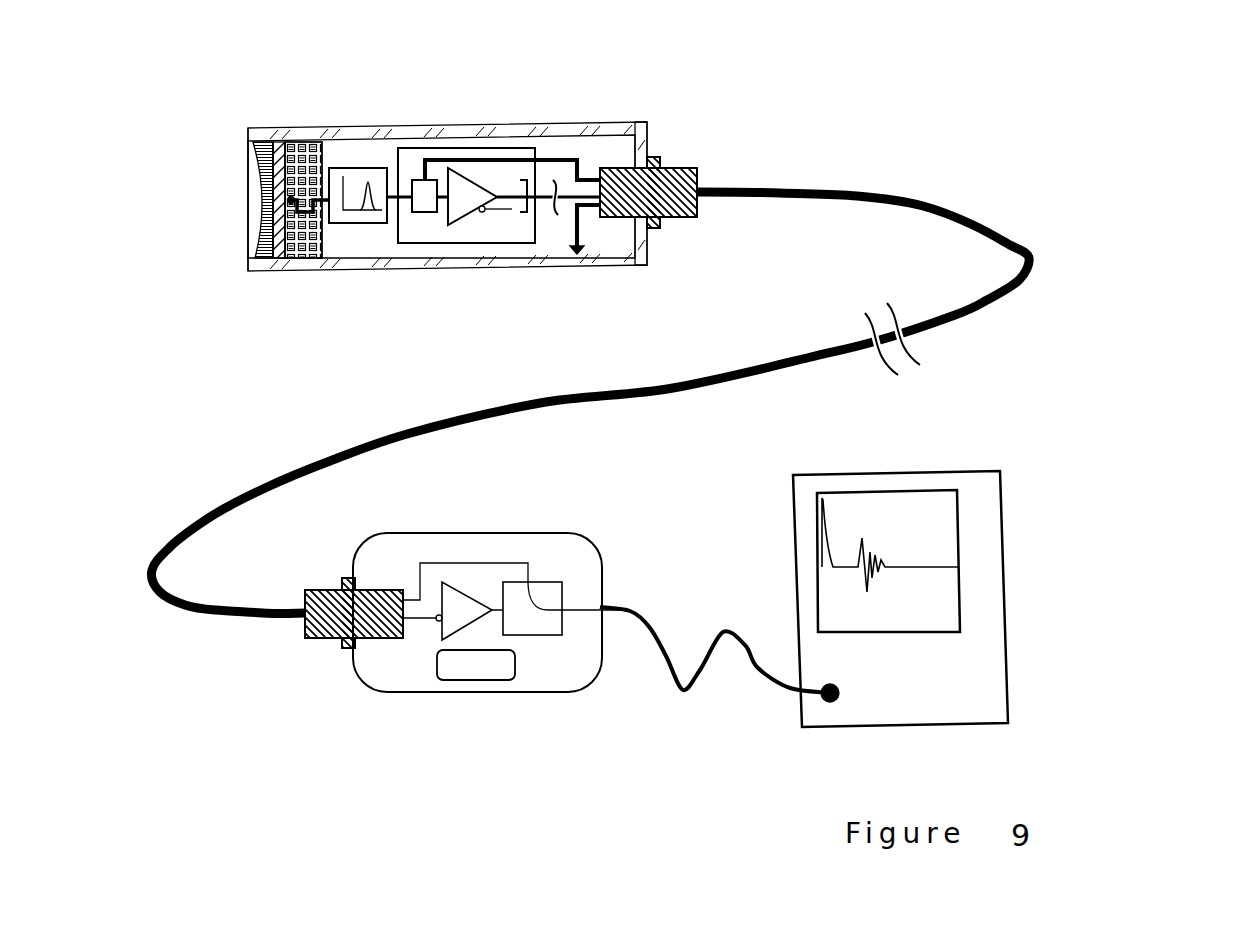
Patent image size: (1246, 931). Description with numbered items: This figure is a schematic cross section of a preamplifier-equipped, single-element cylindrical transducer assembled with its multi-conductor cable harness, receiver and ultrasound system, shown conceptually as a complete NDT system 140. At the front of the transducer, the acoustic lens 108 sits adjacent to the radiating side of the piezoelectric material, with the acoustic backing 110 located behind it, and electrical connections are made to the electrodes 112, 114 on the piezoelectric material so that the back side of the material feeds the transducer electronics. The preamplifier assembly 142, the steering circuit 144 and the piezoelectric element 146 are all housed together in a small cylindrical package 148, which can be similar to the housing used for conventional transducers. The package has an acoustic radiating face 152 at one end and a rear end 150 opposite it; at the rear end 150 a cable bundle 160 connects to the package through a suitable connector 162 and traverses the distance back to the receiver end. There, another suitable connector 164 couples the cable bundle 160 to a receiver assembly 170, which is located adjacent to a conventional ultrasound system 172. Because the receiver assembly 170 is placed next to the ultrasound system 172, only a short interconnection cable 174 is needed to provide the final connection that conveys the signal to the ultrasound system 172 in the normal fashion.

The acoustic lens 108 is at (258, 180).
The acoustic backing 110 is at (303, 250).
The electrode 112 is at (289, 183).
The electrode 114 is at (274, 258).
The system 140 is at (1063, 204).
The preamplifier assembly 142 is at (525, 245).
The steering circuit 144 is at (360, 227).
The piezoelectric element 146 is at (278, 142).
The cylindrical package 148 is at (580, 122).
The rear end 150 is at (642, 121).
The acoustic radiating face 152 is at (240, 127).
The cable bundle 160 is at (890, 190).
The connector 162 is at (689, 167).
The connector 164 is at (318, 640).
The receiver assembly 170 is at (600, 560).
The ultrasound system 172 is at (1006, 653).
The interconnection cable 174 is at (660, 650).